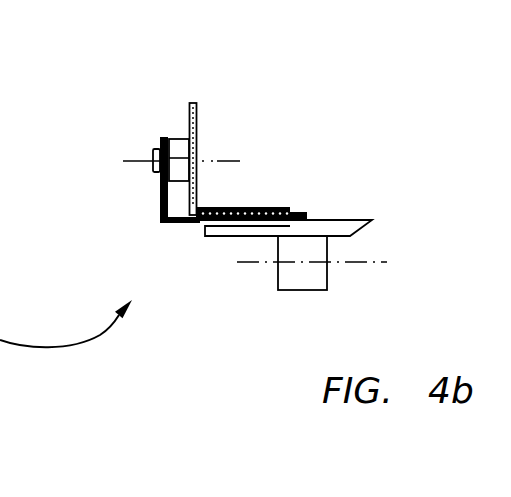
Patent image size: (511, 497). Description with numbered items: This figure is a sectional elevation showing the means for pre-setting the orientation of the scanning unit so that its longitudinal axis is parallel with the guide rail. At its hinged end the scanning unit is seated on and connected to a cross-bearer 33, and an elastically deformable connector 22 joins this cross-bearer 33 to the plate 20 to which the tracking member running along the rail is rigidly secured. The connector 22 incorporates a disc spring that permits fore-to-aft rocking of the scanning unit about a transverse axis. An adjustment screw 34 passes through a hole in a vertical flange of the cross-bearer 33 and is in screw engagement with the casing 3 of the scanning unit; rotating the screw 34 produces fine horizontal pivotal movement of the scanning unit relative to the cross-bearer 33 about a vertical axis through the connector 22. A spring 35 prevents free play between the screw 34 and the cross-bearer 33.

The vertical plate of support member 3 is at (196, 103).
The plate 20 is at (345, 218).
The elastically deformable connector 22 is at (252, 207).
The cross-bearer 33 is at (159, 216).
The adjustment screw 34 is at (155, 150).
The spring 35 is at (180, 140).